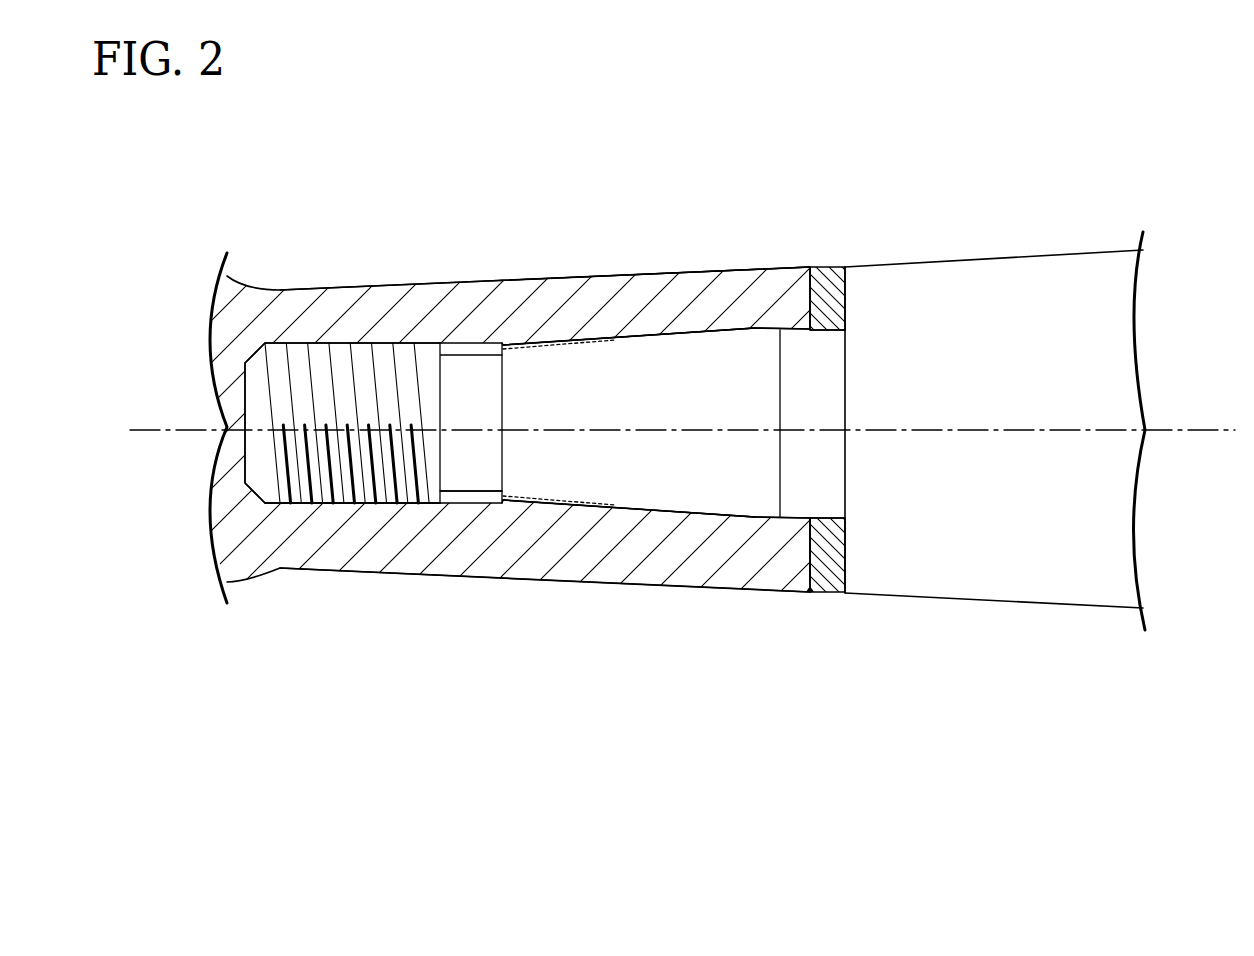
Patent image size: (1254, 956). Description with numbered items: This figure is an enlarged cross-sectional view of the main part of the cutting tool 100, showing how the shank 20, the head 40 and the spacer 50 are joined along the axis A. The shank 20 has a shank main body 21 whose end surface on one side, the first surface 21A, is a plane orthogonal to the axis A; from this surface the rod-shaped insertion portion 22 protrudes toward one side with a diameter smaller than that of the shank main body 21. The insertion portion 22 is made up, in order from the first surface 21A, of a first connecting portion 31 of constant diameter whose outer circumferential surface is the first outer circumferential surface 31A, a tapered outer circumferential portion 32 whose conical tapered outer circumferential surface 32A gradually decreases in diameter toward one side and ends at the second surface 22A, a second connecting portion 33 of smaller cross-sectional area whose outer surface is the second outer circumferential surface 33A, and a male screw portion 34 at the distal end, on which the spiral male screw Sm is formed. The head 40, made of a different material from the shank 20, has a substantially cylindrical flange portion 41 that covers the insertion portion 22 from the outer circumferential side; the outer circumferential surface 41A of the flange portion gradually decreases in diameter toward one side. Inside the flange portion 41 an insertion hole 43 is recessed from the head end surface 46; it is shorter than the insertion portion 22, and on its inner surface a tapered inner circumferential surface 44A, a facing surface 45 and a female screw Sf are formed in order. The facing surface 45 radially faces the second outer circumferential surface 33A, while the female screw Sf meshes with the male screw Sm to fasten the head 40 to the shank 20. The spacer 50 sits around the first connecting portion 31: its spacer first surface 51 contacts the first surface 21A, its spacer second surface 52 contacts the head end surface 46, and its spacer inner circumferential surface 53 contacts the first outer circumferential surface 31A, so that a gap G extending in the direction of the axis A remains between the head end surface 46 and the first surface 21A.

The cutting tool 100 is at (390, 160).
The shank 20 is at (1023, 241).
The shank main body 21 is at (1077, 270).
The first surface 21A is at (847, 553).
The insertion portion 22 is at (632, 520).
The second surface 22A is at (502, 375).
The first connecting portion 31 is at (817, 467).
The first outer circumferential surface 31A is at (827, 327).
The tapered outer circumferential portion 32 is at (580, 475).
The tapered outer circumferential surface 32A is at (680, 330).
The second connecting portion 33 is at (463, 458).
The second outer circumferential surface 33A is at (480, 490).
The male screw portion 34 is at (307, 485).
The head 40 is at (271, 224).
The flange portion 41 is at (553, 274).
The outer circumferential surface of the flange portion 41A is at (623, 275).
The insertion hole 43 is at (759, 342).
The tapered inner circumferential surface 44A is at (713, 331).
The facing surface 45 is at (457, 345).
The head end surface 46 is at (816, 302).
The spacer 50 is at (826, 267).
The spacer first surface 51 is at (847, 537).
The spacer second surface 52 is at (808, 548).
The spacer inner circumferential surface 53 is at (827, 517).
The gap G is at (820, 614).
The axis A is at (1223, 430).
The female screw Sf is at (337, 343).
The male screw Sm is at (352, 503).